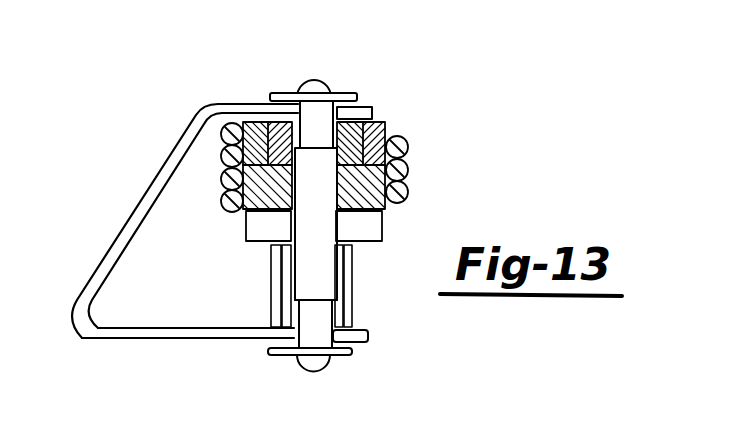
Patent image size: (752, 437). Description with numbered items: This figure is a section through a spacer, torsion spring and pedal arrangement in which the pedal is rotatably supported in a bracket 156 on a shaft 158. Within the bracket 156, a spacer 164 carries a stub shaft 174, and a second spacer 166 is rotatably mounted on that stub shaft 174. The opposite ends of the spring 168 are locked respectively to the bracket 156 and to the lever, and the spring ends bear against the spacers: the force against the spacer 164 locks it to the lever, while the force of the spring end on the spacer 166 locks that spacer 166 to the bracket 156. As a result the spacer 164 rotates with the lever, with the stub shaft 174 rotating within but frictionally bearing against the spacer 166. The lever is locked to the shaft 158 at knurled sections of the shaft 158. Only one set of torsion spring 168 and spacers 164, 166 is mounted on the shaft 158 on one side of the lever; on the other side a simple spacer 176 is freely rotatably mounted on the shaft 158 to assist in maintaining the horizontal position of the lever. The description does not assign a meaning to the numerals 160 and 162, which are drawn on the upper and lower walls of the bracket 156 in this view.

The bracket 156 is at (118, 212).
The shaft 158 is at (317, 357).
The upper wall of bracket 160 is at (237, 102).
The lower wall of bracket 162 is at (218, 339).
The spacer 164 is at (403, 205).
The spacer 166 is at (388, 131).
The spring 168 is at (407, 137).
The stub shaft 174 is at (381, 107).
The simple spacer 176 is at (347, 312).